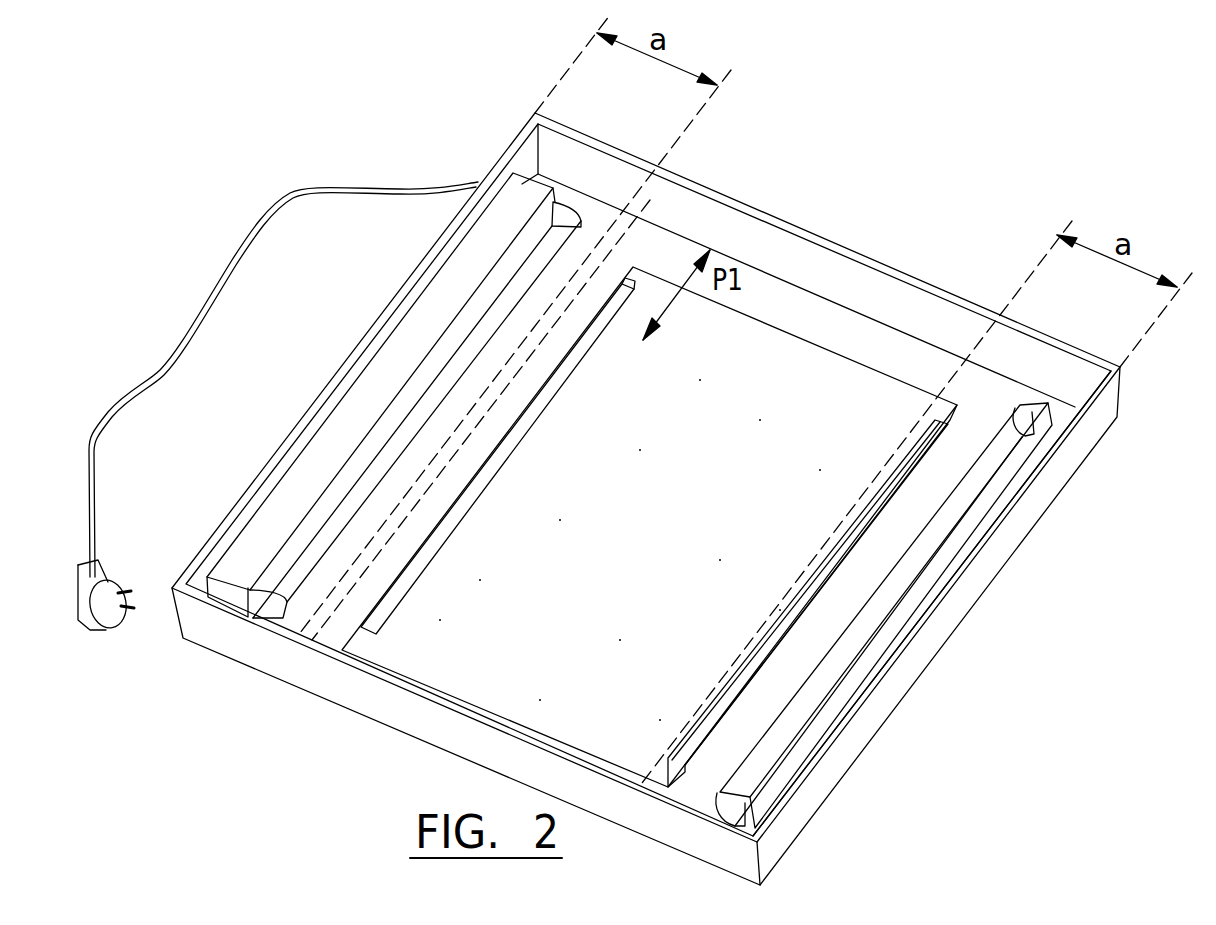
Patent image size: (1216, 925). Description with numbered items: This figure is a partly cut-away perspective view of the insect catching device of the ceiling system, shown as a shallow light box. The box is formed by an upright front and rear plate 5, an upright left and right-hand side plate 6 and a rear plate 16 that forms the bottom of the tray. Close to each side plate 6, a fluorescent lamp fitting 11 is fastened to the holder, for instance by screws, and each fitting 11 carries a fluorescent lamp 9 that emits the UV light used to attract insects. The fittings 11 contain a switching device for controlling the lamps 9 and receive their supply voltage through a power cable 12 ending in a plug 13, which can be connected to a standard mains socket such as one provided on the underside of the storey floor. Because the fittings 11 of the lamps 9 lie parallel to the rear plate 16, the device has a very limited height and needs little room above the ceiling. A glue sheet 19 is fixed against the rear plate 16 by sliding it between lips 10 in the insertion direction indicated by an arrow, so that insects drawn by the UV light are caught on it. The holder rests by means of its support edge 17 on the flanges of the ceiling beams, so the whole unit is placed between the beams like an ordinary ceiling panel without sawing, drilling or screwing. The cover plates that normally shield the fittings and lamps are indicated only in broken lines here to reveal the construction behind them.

The front and rear plate 5 is at (772, 243).
The left and right-hand side plate 6 is at (351, 362).
The fluorescent lamp 9 is at (368, 487).
The lip 10 is at (580, 340).
The fluorescent lamp fitting 11 is at (258, 553).
The power cable 12 is at (424, 198).
The plug 13 is at (97, 630).
The rear plate 16 is at (814, 320).
The support edge 17 is at (890, 668).
The glue sheet 19 is at (826, 378).